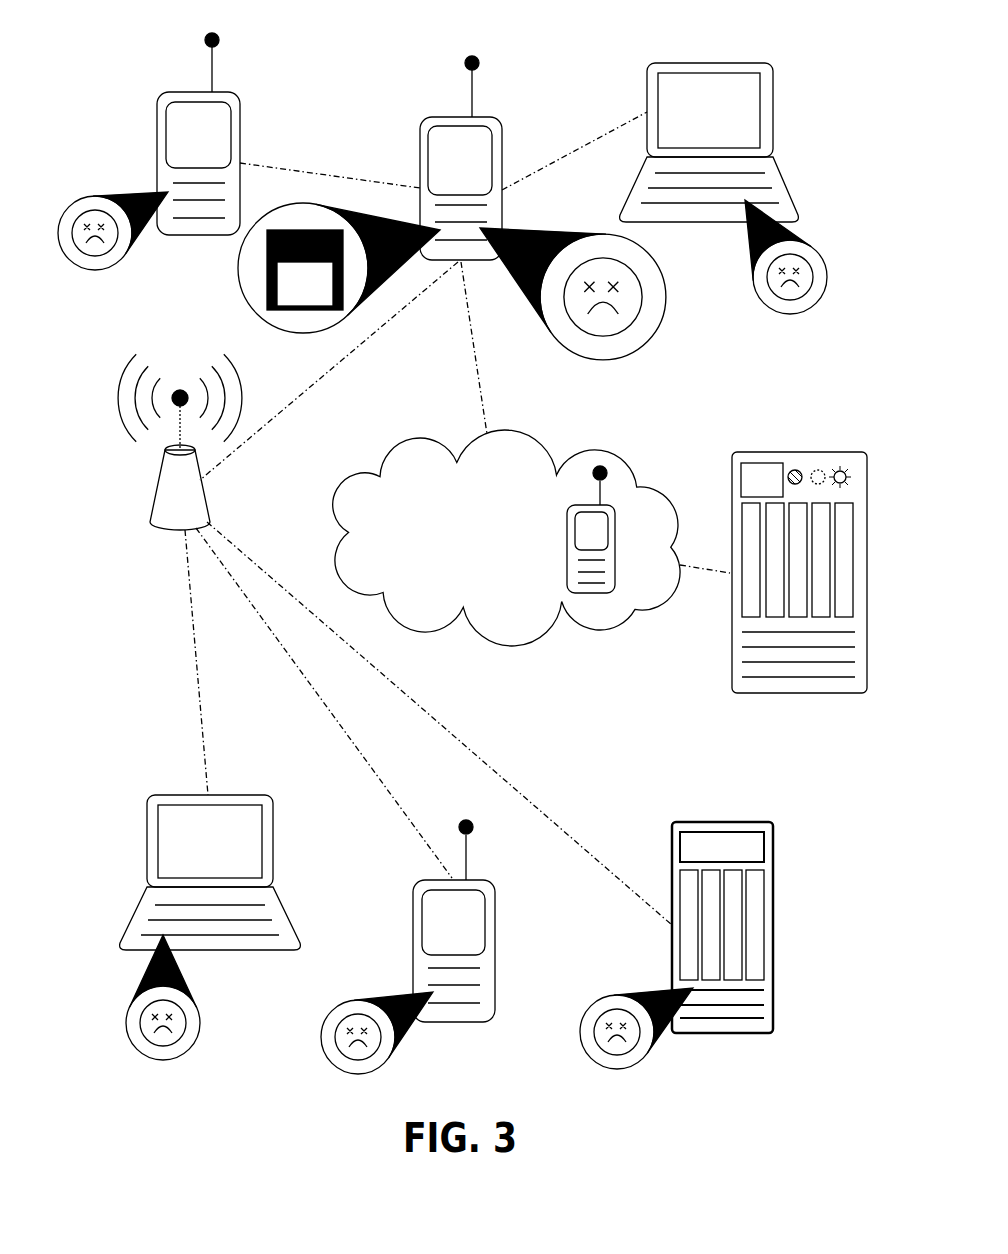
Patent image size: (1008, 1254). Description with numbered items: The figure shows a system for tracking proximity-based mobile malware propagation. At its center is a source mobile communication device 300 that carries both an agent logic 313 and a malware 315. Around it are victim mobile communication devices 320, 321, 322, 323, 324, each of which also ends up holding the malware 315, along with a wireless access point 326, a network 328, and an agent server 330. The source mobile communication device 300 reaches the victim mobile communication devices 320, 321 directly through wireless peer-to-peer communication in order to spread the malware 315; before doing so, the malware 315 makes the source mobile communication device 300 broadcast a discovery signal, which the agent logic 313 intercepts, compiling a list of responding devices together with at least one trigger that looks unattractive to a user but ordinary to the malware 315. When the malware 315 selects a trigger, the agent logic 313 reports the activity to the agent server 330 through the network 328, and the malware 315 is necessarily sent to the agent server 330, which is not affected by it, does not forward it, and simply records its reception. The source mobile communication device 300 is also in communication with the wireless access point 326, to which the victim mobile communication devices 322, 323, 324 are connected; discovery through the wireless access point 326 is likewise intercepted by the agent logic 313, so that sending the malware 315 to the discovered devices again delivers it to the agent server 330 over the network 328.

The source mobile communication device 300 is at (418, 158).
The agent logic 313 is at (302, 271).
The malware 315 is at (442, 646).
The victim mobile communication device 320 is at (148, 134).
The victim mobile communication device 321 is at (672, 128).
The victim mobile communication device 322 is at (186, 851).
The victim mobile communication device 323 is at (404, 921).
The victim mobile communication device 324 is at (749, 906).
The wireless access point 326 is at (147, 442).
The network 328 is at (519, 528).
The agent server 330 is at (749, 576).